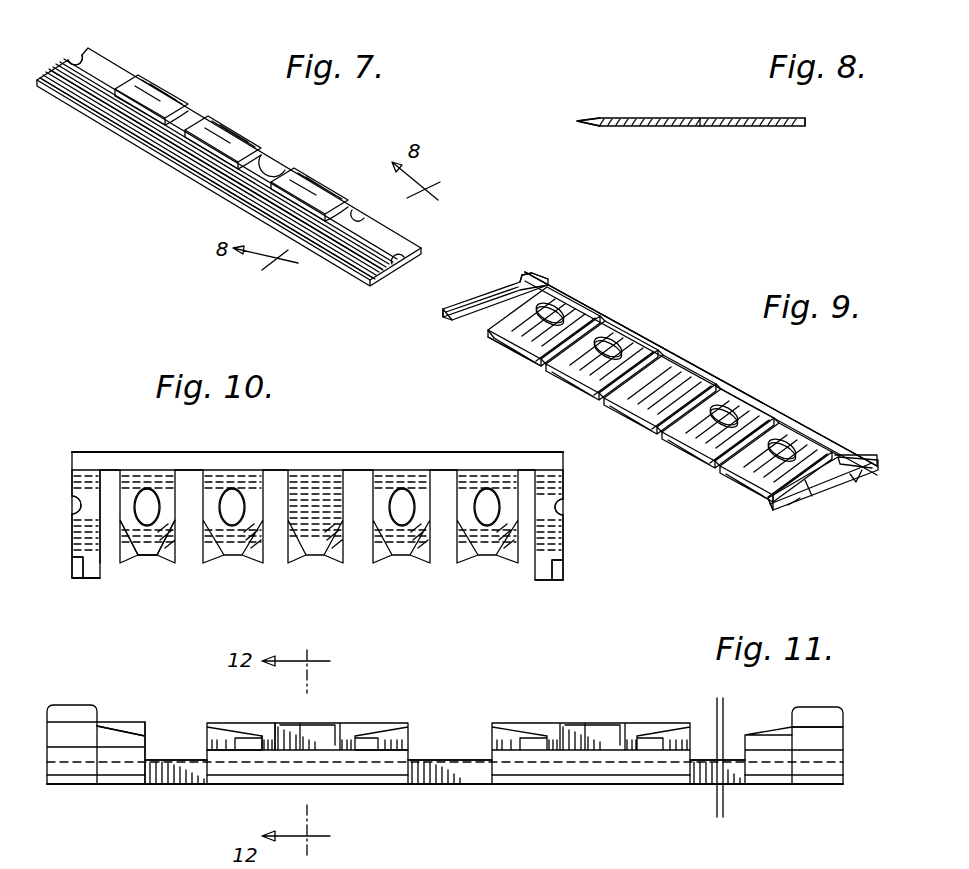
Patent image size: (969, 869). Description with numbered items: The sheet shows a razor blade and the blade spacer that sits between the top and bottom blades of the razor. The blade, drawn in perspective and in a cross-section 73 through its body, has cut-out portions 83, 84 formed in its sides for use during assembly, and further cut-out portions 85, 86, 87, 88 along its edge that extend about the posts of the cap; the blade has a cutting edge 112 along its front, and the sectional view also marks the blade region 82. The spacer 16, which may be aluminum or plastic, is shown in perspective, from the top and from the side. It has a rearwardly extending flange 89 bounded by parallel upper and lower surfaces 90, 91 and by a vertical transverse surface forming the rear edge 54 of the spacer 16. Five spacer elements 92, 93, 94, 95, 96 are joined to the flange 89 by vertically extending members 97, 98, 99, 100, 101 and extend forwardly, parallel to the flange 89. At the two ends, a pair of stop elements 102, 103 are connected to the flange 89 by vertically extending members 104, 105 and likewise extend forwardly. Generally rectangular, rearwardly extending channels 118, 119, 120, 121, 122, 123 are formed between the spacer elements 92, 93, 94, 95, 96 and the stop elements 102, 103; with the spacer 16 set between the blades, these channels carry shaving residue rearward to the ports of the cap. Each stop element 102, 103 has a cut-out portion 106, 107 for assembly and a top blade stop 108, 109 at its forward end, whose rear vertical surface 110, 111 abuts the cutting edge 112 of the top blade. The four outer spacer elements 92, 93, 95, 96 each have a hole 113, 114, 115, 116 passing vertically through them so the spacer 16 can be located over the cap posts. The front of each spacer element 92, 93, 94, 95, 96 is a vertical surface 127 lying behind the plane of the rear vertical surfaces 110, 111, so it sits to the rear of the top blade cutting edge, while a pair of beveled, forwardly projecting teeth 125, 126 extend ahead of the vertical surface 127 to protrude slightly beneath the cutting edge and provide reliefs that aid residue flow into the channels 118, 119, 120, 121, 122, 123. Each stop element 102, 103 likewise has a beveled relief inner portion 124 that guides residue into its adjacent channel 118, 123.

In FIG. 9, the spacer 16 is at (742, 497).
In FIG. 10, the spacer 16 is at (74, 440).
In FIG. 11, the spacer 16 is at (625, 792).
In FIG. 9, the rear edge 54 is at (701, 362).
In FIG. 10, the rear edge 54 is at (352, 458).
In FIG. 7, the insulation cutting blade 73 is at (205, 152).
In FIG. 8, the insulation cutting blade 73 is at (638, 118).
In FIG. 7, the notch 82 is at (232, 128).
In FIG. 8, the notch 82 is at (807, 125).
In FIG. 7, the cut-out portion 83 is at (72, 58).
In FIG. 7, the cut-out portion 84 is at (398, 262).
In FIG. 7, the cut-out portion 85 is at (140, 88).
In FIG. 7, the cut-out portion 86 is at (200, 125).
In FIG. 7, the cut-out portion 87 is at (302, 188).
In FIG. 7, the cut-out portion 88 is at (358, 222).
In FIG. 8, the cut-out portion 88 is at (702, 127).
In FIG. 9, the flange 89 is at (860, 478).
In FIG. 10, the flange 89 is at (460, 466).
In FIG. 9, the upper surface 90 is at (770, 440).
In FIG. 10, the upper surface 90 is at (300, 478).
In FIG. 11, the upper surface 90 is at (462, 758).
In FIG. 11, the lower surface 91 is at (435, 786).
In FIG. 9, the spacer element 92 is at (566, 291).
In FIG. 10, the spacer element 92 is at (160, 475).
In FIG. 11, the spacer element 92 is at (330, 722).
In FIG. 9, the spacer element 93 is at (640, 335).
In FIG. 10, the spacer element 93 is at (222, 475).
In FIG. 11, the spacer element 93 is at (585, 725).
In FIG. 9, the spacer element 94 is at (686, 370).
In FIG. 10, the spacer element 94 is at (316, 480).
In FIG. 9, the spacer element 95 is at (745, 407).
In FIG. 10, the spacer element 95 is at (396, 478).
In FIG. 9, the spacer element 96 is at (800, 440).
In FIG. 10, the spacer element 96 is at (500, 478).
In FIG. 9, the vertically extending member 97 is at (604, 312).
In FIG. 9, the vertically extending member 98 is at (662, 350).
In FIG. 9, the vertically extending member 99 is at (720, 384).
In FIG. 9, the vertically extending member 100 is at (778, 418).
In FIG. 9, the vertically extending member 101 is at (838, 452).
In FIG. 9, the stop element 102 is at (470, 296).
In FIG. 10, the stop element 102 is at (80, 530).
In FIG. 11, the stop element 102 is at (47, 725).
In FIG. 9, the stop element 103 is at (830, 495).
In FIG. 10, the stop element 103 is at (566, 540).
In FIG. 11, the stop element 103 is at (845, 745).
In FIG. 9, the vertically extending member 104 is at (530, 280).
In FIG. 9, the vertically extending member 105 is at (850, 456).
In FIG. 10, the cut-out portion 106 is at (70, 505).
In FIG. 9, the cut-out portion 107 is at (848, 480).
In FIG. 10, the cut-out portion 107 is at (572, 507).
In FIG. 9, the top blade stop 108 is at (448, 316).
In FIG. 10, the top blade stop 108 is at (86, 580).
In FIG. 11, the top blade stop 108 is at (98, 720).
In FIG. 9, the top blade stop 109 is at (775, 512).
In FIG. 10, the top blade stop 109 is at (556, 580).
In FIG. 11, the top blade stop 109 is at (815, 707).
In FIG. 9, the rear vertical surface 110 is at (466, 303).
In FIG. 10, the rear vertical surface 110 is at (76, 566).
In FIG. 9, the rear vertical surface 111 is at (812, 500).
In FIG. 10, the rear vertical surface 111 is at (558, 562).
In FIG. 7, the cutting edge 112 is at (110, 127).
In FIG. 8, the cutting edge 112 is at (576, 120).
In FIG. 9, the hole 113 is at (558, 308).
In FIG. 10, the hole 113 is at (140, 498).
In FIG. 9, the hole 114 is at (616, 342).
In FIG. 10, the hole 114 is at (236, 497).
In FIG. 9, the hole 115 is at (735, 405).
In FIG. 10, the hole 115 is at (410, 497).
In FIG. 9, the hole 116 is at (795, 440).
In FIG. 10, the hole 116 is at (492, 497).
In FIG. 9, the channel 118 is at (490, 335).
In FIG. 10, the channel 118 is at (110, 528).
In FIG. 11, the channel 118 is at (162, 736).
In FIG. 9, the channel 119 is at (560, 375).
In FIG. 10, the channel 119 is at (190, 550).
In FIG. 11, the channel 119 is at (462, 736).
In FIG. 9, the channel 120 is at (615, 405).
In FIG. 10, the channel 120 is at (278, 548).
In FIG. 9, the channel 121 is at (675, 440).
In FIG. 10, the channel 121 is at (360, 548).
In FIG. 9, the channel 122 is at (735, 475).
In FIG. 10, the channel 122 is at (448, 548).
In FIG. 9, the channel 123 is at (790, 505).
In FIG. 10, the channel 123 is at (528, 552).
In FIG. 11, the channel 123 is at (730, 750).
In FIG. 10, the beveled relief inner portion 124 is at (104, 560).
In FIG. 11, the beveled relief inner portion 124 is at (138, 724).
In FIG. 10, the tooth 125 is at (134, 556).
In FIG. 11, the tooth 125 is at (216, 752).
In FIG. 10, the tooth 126 is at (168, 552).
In FIG. 11, the tooth 126 is at (400, 752).
In FIG. 9, the vertical surface 127 is at (520, 360).
In FIG. 10, the vertical surface 127 is at (155, 560).
In FIG. 11, the vertical surface 127 is at (294, 722).